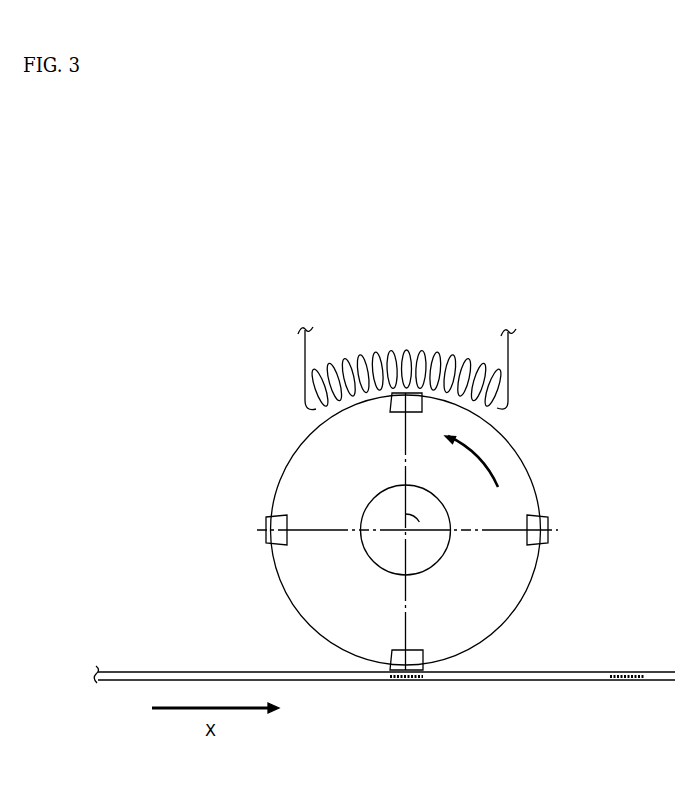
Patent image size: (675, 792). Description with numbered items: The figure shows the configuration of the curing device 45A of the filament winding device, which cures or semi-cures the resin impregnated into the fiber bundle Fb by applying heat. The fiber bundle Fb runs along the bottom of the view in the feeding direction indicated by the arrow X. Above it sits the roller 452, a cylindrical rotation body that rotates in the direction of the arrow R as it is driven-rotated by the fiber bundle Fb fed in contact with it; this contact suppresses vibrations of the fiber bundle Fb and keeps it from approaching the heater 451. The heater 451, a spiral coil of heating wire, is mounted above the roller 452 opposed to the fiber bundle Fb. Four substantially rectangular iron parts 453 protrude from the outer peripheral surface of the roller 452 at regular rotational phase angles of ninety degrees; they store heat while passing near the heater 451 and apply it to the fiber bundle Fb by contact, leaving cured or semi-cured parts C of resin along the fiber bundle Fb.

The curing device 45A is at (205, 425).
The heater 451 is at (509, 375).
The roller 452 is at (520, 455).
The iron part 453 is at (396, 393).
The fiber bundle Fb is at (213, 671).
The cured or semi-cured part C is at (413, 684).